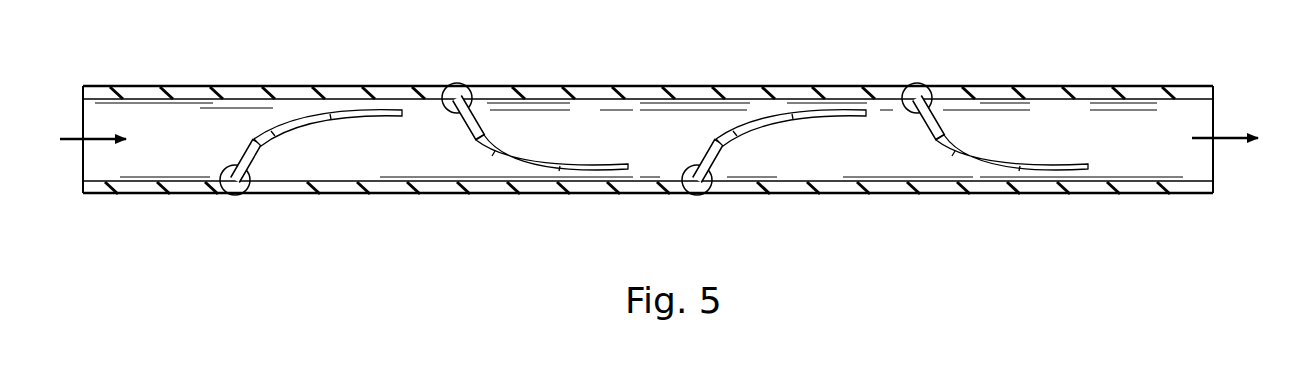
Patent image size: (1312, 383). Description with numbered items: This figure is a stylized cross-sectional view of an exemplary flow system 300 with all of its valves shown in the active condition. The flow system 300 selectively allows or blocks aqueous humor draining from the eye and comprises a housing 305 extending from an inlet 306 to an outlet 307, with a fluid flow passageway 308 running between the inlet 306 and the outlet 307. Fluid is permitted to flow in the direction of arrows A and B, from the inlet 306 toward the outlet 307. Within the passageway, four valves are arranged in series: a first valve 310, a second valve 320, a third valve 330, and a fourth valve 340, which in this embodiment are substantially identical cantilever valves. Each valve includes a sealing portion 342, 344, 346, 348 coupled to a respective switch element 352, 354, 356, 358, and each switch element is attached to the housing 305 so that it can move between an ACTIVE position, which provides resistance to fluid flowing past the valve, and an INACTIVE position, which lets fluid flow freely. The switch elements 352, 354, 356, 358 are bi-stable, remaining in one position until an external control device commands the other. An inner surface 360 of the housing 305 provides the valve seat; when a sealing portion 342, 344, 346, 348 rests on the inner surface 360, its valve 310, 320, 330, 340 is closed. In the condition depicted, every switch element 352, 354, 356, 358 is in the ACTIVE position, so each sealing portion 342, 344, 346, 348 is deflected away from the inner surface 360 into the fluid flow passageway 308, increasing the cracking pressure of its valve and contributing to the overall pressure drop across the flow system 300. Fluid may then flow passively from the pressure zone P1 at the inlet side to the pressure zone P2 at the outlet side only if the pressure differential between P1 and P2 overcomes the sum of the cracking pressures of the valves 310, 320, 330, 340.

The flow system 300 is at (682, 57).
The housing 305 is at (135, 83).
The inlet 306 is at (78, 173).
The outlet 307 is at (1214, 98).
The fluid flow passageway 308 is at (1162, 155).
The first valve 310 is at (295, 141).
The second valve 320 is at (459, 129).
The third valve 330 is at (754, 139).
The fourth valve 340 is at (917, 133).
The sealing portion 342 is at (332, 110).
The sealing portion 344 is at (590, 163).
The sealing portion 346 is at (783, 112).
The sealing portion 348 is at (1052, 163).
The switch element 352 is at (238, 196).
The switch element 354 is at (455, 83).
The switch element 356 is at (698, 196).
The switch element 358 is at (915, 83).
The inner surface 360 is at (192, 98).
The arrow A is at (70, 134).
The arrow B is at (1230, 146).
The pressure zone P1 is at (79, 140).
The pressure zone P2 is at (1247, 143).